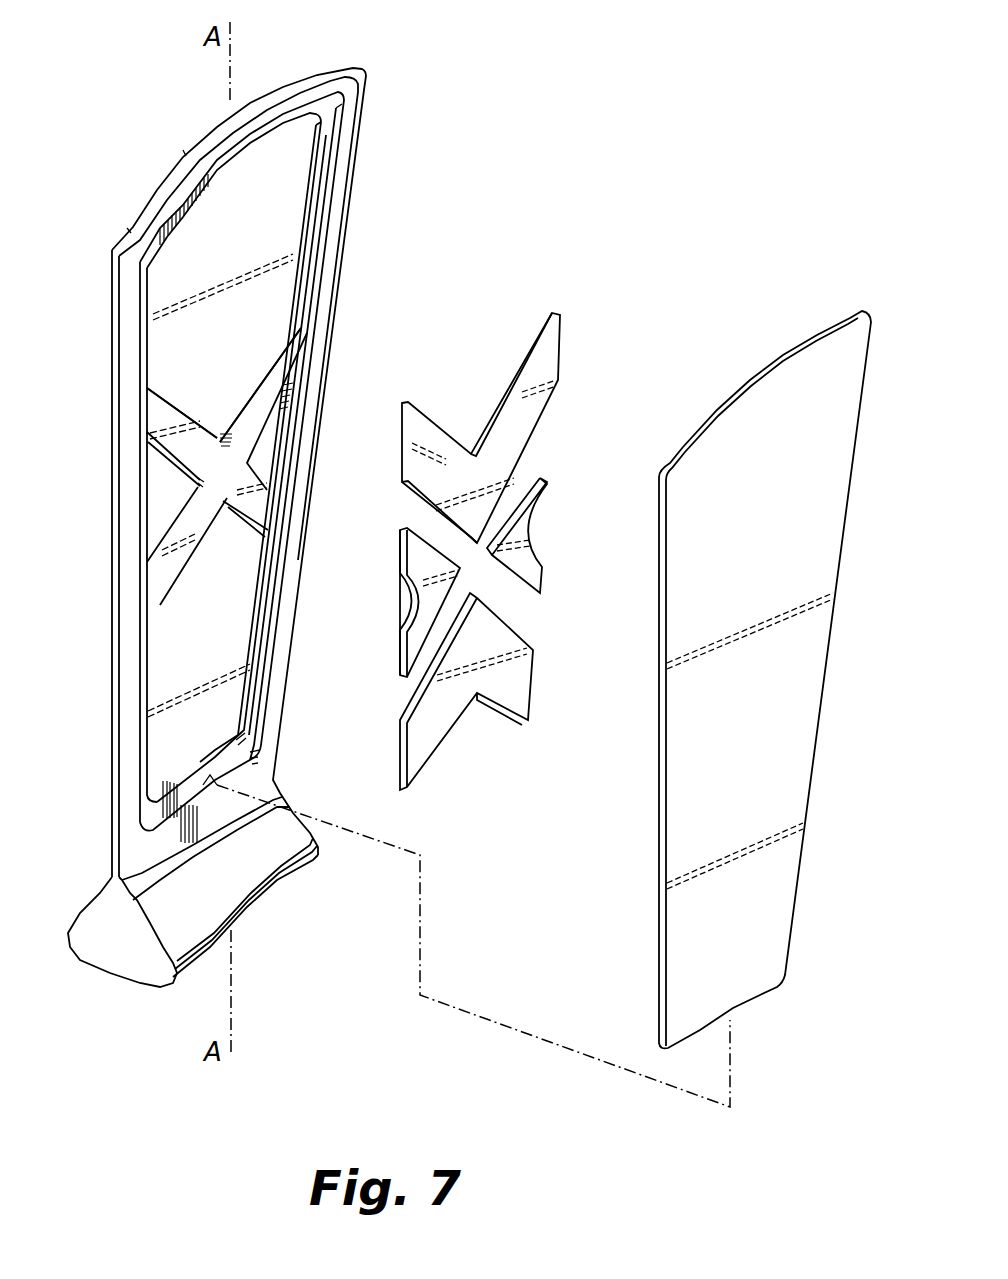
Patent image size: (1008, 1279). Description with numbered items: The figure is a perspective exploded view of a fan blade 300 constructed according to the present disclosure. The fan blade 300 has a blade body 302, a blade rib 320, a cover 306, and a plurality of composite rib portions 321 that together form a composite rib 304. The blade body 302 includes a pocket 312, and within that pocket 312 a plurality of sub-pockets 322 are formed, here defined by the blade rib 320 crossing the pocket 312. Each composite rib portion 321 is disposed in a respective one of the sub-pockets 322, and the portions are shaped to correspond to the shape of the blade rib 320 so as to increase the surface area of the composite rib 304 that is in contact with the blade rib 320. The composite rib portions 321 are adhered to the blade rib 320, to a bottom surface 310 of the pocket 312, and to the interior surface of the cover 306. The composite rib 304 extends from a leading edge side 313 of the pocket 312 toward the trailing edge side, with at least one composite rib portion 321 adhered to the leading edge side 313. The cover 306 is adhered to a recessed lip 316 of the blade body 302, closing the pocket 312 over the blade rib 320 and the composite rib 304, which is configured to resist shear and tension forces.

The fan blade 300 is at (469, 535).
The blade body 302 is at (222, 505).
The composite rib 304 is at (475, 526).
The cover 306 is at (713, 394).
The bottom surface 310 is at (223, 677).
The pocket 312 is at (262, 175).
The leading edge side 313 is at (150, 650).
The recessed lip 316 is at (330, 108).
The blade rib 320 is at (252, 399).
The composite rib portions 321 is at (427, 420).
The sub-pockets 322 is at (218, 425).